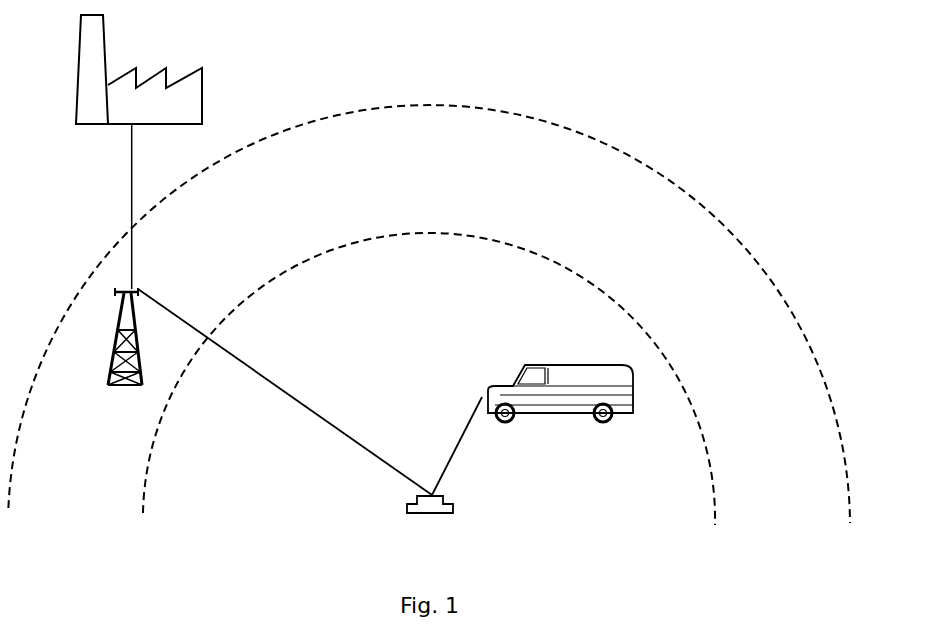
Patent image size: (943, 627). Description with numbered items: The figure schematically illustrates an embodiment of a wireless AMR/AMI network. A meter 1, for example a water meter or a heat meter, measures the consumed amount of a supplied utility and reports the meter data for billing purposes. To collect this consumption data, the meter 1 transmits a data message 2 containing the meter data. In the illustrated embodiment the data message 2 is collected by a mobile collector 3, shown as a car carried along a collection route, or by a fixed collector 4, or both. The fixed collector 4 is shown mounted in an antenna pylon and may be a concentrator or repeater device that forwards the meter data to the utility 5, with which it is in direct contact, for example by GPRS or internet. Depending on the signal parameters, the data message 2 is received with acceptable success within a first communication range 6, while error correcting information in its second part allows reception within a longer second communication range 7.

The meter 1 is at (432, 515).
The data message 2 is at (455, 448).
The mobile collector 3 is at (580, 363).
The fixed collector 4 is at (115, 340).
The utility 5 is at (77, 82).
The first communication range 6 is at (703, 442).
The second communication range 7 is at (805, 340).